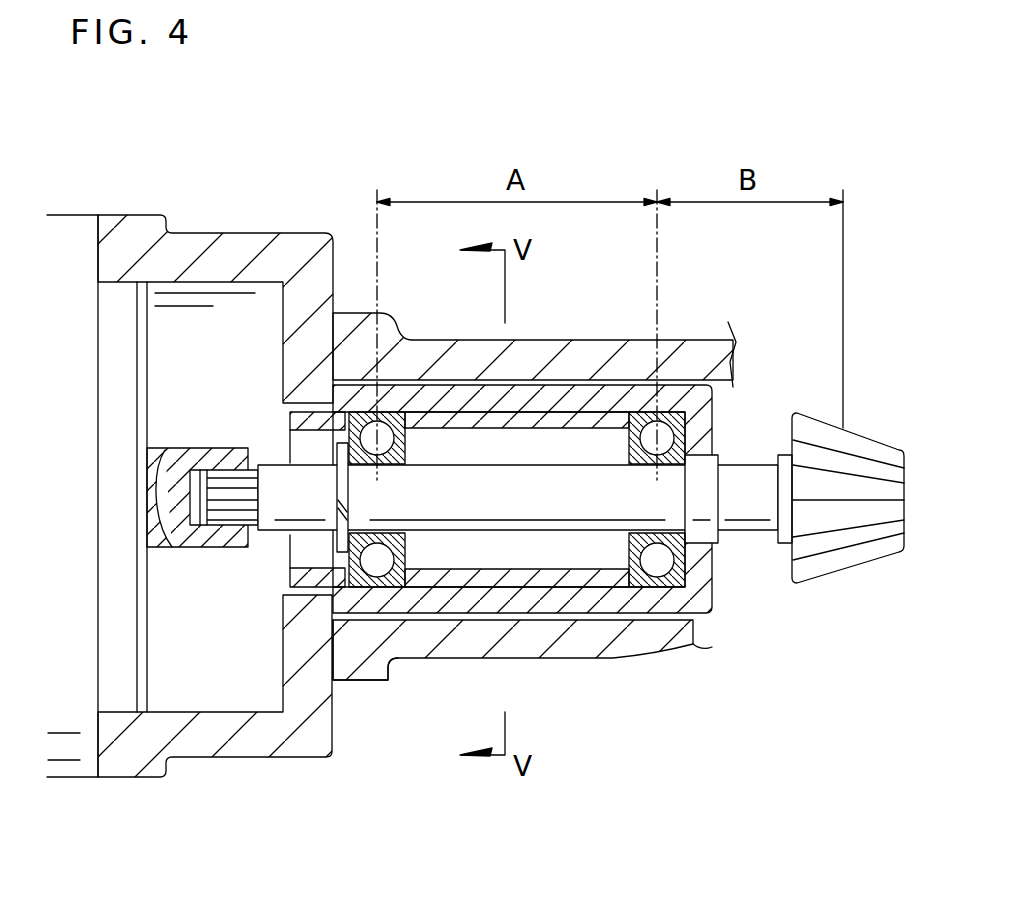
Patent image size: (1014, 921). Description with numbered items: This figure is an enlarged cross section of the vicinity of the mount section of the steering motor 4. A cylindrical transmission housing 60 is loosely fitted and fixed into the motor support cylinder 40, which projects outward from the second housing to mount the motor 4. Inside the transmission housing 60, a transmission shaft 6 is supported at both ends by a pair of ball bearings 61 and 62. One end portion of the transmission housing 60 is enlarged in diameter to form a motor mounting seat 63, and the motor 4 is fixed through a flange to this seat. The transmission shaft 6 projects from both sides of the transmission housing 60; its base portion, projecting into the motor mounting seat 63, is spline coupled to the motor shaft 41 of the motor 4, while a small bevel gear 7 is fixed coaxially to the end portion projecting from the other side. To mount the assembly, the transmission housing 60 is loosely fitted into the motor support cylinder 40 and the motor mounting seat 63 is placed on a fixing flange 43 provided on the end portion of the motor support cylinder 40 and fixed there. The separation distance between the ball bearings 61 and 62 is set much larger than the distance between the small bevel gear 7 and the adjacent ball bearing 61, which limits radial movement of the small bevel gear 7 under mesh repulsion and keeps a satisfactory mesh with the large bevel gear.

The motor 4 is at (75, 778).
The transmission shaft 6 is at (541, 478).
The small bevel gear 7 is at (843, 568).
The motor support cylinder 40 is at (467, 652).
The motor shaft 41 is at (199, 548).
The fixing flange 43 is at (362, 673).
The transmission housing 60 is at (458, 388).
The ball bearing 61 is at (652, 575).
The ball bearing 62 is at (393, 572).
The motor mounting seat 63 is at (218, 245).